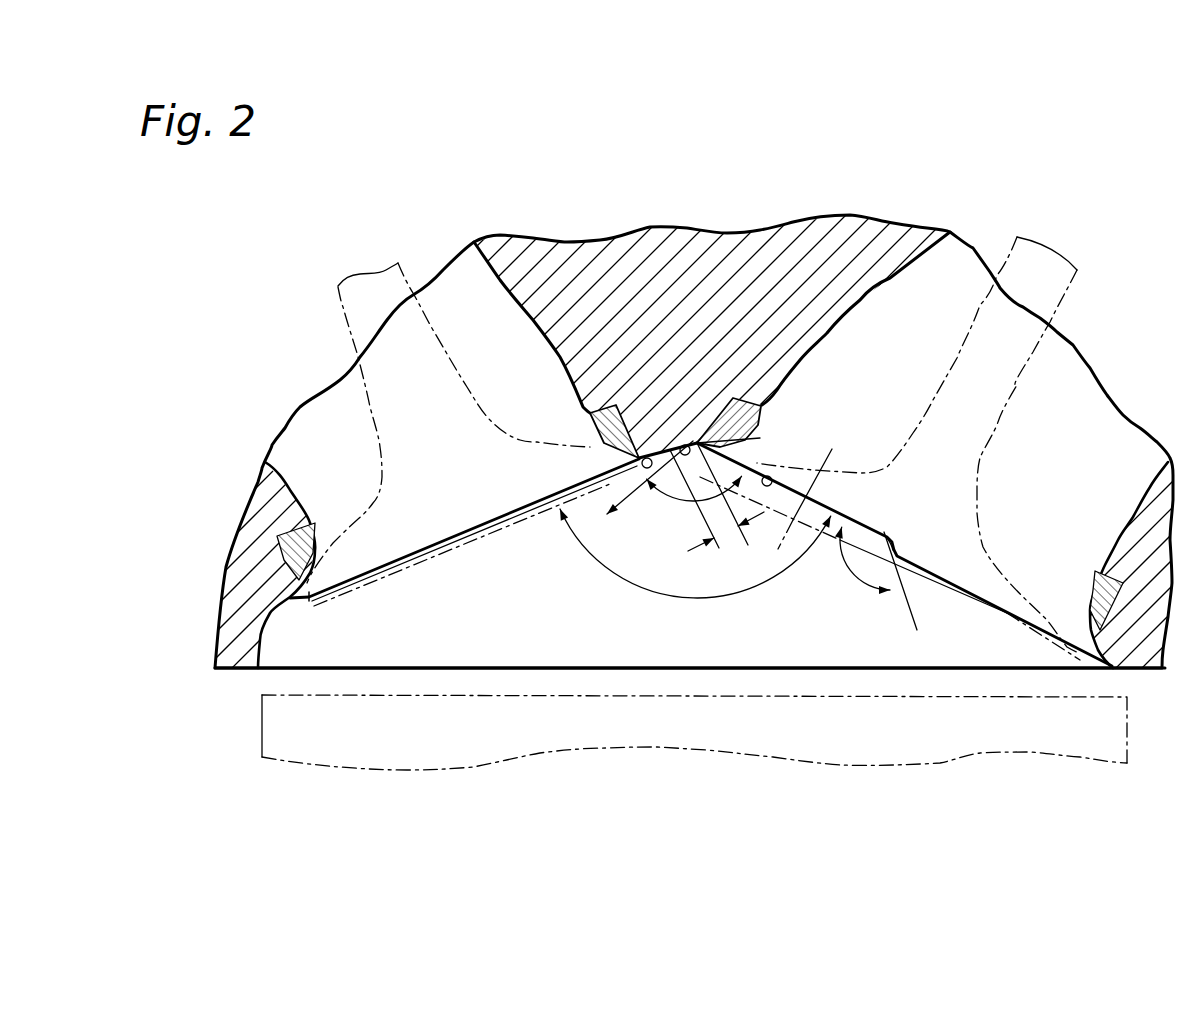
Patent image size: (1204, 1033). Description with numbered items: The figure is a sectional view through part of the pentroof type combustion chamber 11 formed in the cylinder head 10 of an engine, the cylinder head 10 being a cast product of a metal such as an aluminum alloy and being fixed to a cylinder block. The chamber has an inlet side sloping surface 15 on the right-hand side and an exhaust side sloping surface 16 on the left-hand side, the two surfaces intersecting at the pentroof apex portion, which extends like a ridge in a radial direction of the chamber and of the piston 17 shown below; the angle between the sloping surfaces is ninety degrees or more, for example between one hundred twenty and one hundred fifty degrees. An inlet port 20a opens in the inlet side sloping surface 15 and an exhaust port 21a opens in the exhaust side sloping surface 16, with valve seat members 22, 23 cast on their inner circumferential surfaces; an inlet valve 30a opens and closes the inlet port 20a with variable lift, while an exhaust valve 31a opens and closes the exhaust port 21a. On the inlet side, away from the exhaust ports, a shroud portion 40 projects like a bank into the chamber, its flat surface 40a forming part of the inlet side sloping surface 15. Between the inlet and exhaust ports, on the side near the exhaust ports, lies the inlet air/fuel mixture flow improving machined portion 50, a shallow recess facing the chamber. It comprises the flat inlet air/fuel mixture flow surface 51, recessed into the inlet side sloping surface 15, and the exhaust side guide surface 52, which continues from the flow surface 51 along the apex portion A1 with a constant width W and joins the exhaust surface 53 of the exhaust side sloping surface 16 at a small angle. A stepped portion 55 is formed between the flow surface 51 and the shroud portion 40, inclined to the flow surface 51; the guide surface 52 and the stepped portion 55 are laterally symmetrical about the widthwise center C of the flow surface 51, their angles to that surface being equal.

The cylinder head 10 is at (810, 237).
The pentroof type combustion chamber 11 is at (602, 447).
The inlet side sloping surface 15 is at (940, 587).
The exhaust side sloping surface 16 is at (434, 559).
The piston 17 is at (1127, 713).
The inlet port 20a is at (1036, 461).
The exhaust port 21a is at (346, 423).
The valve seat member 22 is at (760, 408).
The valve seat member 23 is at (590, 433).
The inlet valve 30a is at (977, 490).
The exhaust valve 31a is at (488, 413).
The shroud portion 40 is at (1048, 625).
The surface of the shroud portion 40a is at (1013, 622).
The inlet air/fuel mixture flow improving machined portion 50 is at (777, 501).
The inlet air/fuel mixture flow surface 51 is at (773, 478).
The exhaust side guide surface 52 is at (680, 440).
The exhaust surface 53 is at (645, 456).
The stepped portion 55 is at (893, 546).
The apex portion of the inlet air/fuel mixture flow improving machined portion A1 is at (695, 428).
The widthwise center of the inlet air/fuel mixture flow surface C is at (809, 486).
The width of the exhaust side guide surface W is at (724, 525).